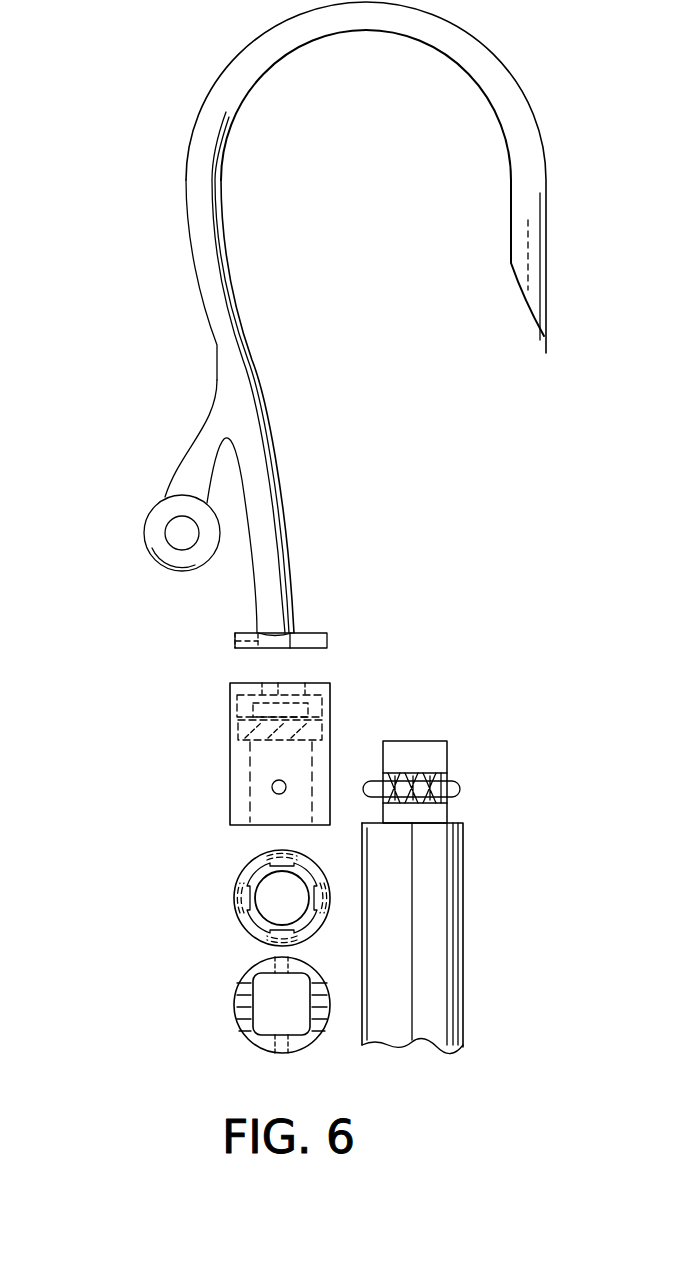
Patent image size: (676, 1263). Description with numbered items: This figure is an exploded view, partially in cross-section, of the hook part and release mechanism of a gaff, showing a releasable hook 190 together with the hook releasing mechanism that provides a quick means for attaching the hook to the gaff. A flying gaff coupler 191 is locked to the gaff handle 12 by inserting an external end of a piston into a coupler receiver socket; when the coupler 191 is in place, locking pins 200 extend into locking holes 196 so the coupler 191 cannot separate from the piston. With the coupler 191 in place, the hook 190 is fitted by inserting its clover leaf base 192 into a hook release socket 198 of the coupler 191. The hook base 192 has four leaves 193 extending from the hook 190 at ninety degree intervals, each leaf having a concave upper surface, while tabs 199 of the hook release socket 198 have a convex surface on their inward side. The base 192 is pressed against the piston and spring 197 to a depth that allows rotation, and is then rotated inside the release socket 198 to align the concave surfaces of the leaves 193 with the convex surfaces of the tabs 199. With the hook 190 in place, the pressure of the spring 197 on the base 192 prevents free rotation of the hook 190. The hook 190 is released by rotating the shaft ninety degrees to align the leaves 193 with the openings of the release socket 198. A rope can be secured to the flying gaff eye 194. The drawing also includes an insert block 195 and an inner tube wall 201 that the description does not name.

The gaff handle 12 is at (463, 1010).
The releasable hook 190 is at (245, 313).
The flying gaff coupler 191 is at (265, 871).
The clover leaf base 192 is at (328, 638).
The leaves 193 is at (237, 639).
The flying gaff eye 194 is at (145, 522).
The insert block 195 is at (265, 755).
The locking holes 196 is at (270, 790).
The spring 197 is at (248, 725).
The hook release socket 198 is at (248, 689).
The tabs 199 is at (448, 762).
The locking pins 200 is at (462, 790).
The inner wall 201 is at (445, 896).